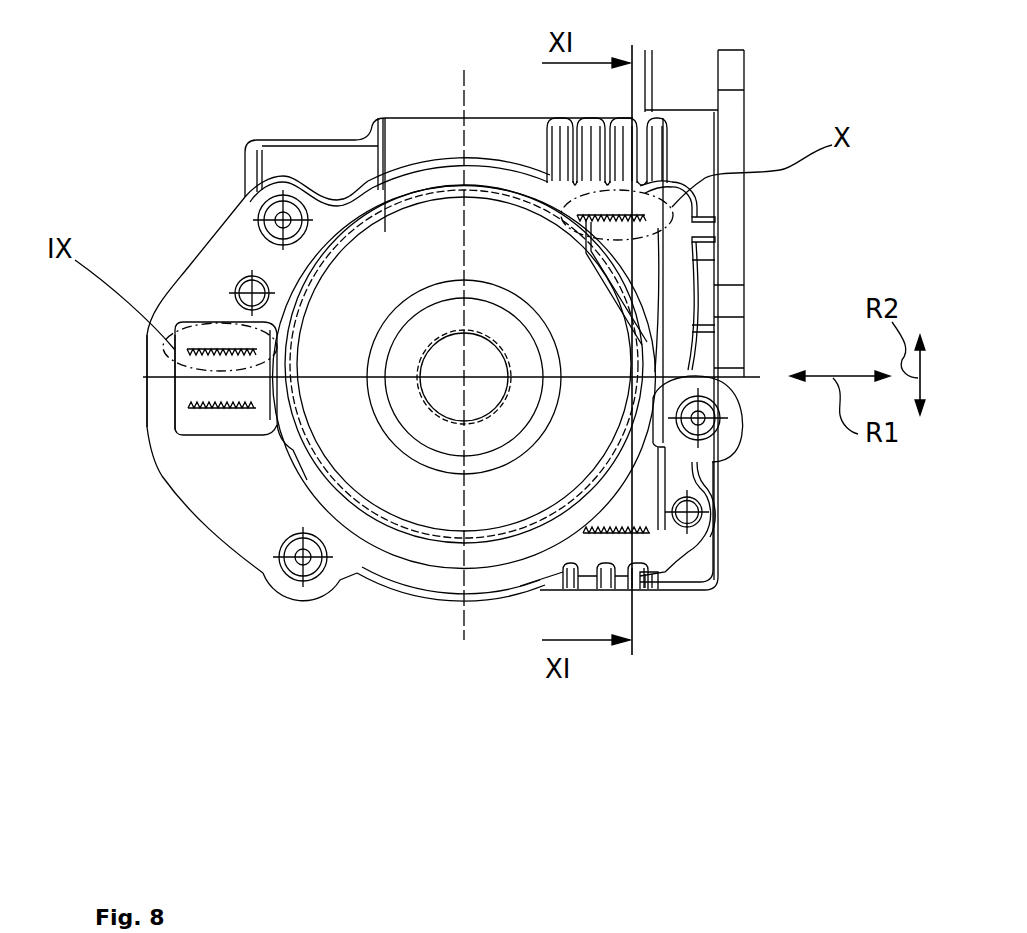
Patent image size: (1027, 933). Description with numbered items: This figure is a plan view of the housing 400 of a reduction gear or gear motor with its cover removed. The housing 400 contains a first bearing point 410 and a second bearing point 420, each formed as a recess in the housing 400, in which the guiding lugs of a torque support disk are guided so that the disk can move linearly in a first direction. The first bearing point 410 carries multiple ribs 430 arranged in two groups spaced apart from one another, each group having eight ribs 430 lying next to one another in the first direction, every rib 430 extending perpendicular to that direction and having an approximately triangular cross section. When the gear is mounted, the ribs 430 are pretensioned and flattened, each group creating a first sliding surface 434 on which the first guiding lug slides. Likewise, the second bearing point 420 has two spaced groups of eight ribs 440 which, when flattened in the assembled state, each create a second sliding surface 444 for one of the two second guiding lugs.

The housing 400 is at (220, 255).
The first bearing point 410 is at (192, 390).
The second bearing point 420 is at (652, 265).
The ribs 430 is at (218, 350).
The first sliding surface 434 is at (163, 342).
The ribs 440 is at (645, 212).
The second sliding surface 444 is at (642, 236).